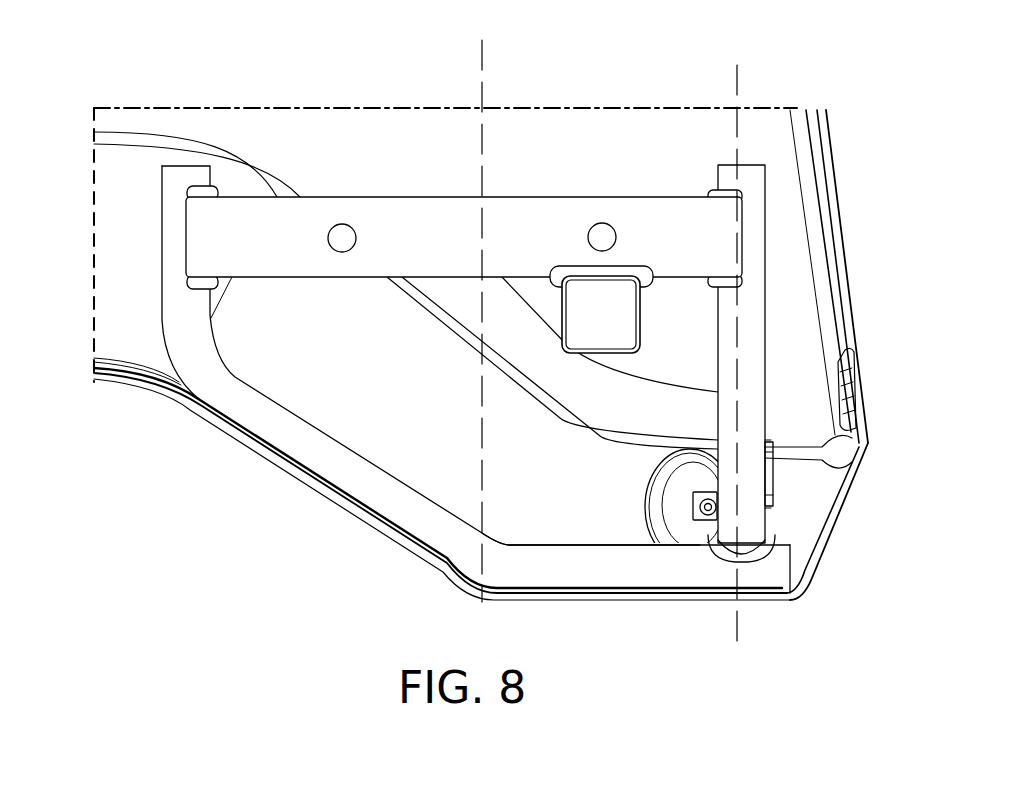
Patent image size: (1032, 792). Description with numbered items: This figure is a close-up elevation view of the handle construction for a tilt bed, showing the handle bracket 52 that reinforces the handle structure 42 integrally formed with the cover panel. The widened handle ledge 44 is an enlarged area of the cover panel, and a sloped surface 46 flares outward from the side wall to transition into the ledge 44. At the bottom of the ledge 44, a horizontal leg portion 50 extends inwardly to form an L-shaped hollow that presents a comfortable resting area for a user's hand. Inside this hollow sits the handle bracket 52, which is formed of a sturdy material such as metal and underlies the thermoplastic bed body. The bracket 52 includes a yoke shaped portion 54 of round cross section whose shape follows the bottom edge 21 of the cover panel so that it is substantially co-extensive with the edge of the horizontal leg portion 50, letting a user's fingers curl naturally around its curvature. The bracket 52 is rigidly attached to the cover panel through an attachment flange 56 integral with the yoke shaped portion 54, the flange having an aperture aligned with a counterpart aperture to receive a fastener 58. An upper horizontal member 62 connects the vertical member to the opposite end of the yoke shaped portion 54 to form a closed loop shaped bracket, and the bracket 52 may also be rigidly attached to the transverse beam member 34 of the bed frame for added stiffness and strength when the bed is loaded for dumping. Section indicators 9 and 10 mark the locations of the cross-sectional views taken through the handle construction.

The section line 9- 9 is at (450, 612).
The section line 10- 10 is at (710, 640).
The bottom edge 21 is at (282, 468).
The transverse beam member 34 is at (640, 318).
The handle structure 42 is at (207, 98).
The handle ledge 44 is at (850, 478).
The sloped surface 46 is at (866, 422).
The horizontal leg portion 50 is at (776, 603).
The handle bracket 52 is at (160, 265).
The yoke shaped portion 54 is at (410, 503).
The attachment flange 56 is at (683, 506).
The fastener 58 is at (705, 523).
The upper horizontal member 62 is at (437, 211).